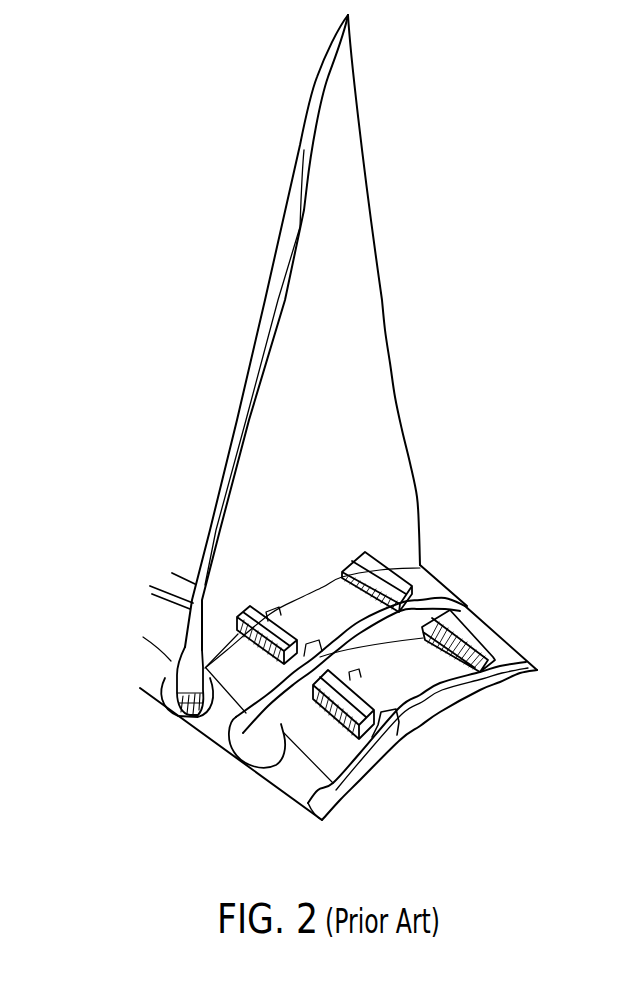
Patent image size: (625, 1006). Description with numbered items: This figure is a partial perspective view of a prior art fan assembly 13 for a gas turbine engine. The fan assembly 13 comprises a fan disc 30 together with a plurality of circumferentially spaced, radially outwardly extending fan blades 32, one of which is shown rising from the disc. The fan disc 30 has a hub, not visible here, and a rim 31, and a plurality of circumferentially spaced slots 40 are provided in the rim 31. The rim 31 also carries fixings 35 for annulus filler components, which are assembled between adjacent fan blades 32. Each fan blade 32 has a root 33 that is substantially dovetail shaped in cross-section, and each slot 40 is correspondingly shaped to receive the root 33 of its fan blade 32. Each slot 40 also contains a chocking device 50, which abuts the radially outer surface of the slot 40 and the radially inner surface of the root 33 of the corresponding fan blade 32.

The fan assembly 13 is at (150, 131).
The fan blade 32 is at (288, 247).
The root 33 is at (177, 648).
The fan disc 30 is at (472, 702).
The rim 31 is at (417, 678).
The fixings 35 is at (460, 637).
The slot 40 is at (160, 692).
The chocking device 50 is at (185, 720).